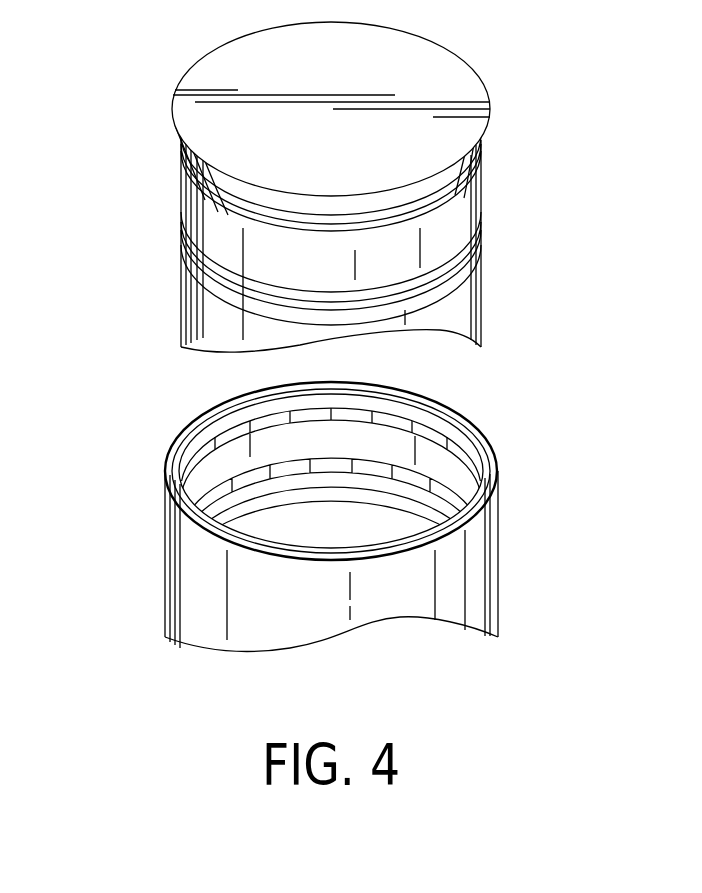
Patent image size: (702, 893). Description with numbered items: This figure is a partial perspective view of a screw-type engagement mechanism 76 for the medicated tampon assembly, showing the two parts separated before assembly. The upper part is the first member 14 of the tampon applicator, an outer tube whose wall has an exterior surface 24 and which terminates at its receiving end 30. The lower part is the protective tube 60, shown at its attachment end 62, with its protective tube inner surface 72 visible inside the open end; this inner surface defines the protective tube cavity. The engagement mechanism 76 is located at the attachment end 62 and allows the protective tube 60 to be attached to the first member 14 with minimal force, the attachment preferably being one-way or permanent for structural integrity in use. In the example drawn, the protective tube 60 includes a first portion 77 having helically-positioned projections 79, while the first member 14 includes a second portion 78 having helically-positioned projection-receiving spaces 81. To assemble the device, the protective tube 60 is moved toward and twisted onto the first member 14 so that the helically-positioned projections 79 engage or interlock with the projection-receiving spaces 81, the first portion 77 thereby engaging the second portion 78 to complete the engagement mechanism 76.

The first member 14 is at (481, 293).
The exterior surface 24 is at (481, 328).
The receiving end 30 is at (491, 103).
The protective tube 60 is at (500, 583).
The attachment end 62 is at (500, 500).
The protective tube inner surface 72 is at (207, 452).
The engagement mechanism 76 is at (592, 271).
The first portion 77 is at (458, 413).
The second portion 78 is at (498, 198).
The helically-positioned projections 79 is at (470, 446).
The helically-positioned projection-receiving spaces 81 is at (481, 167).